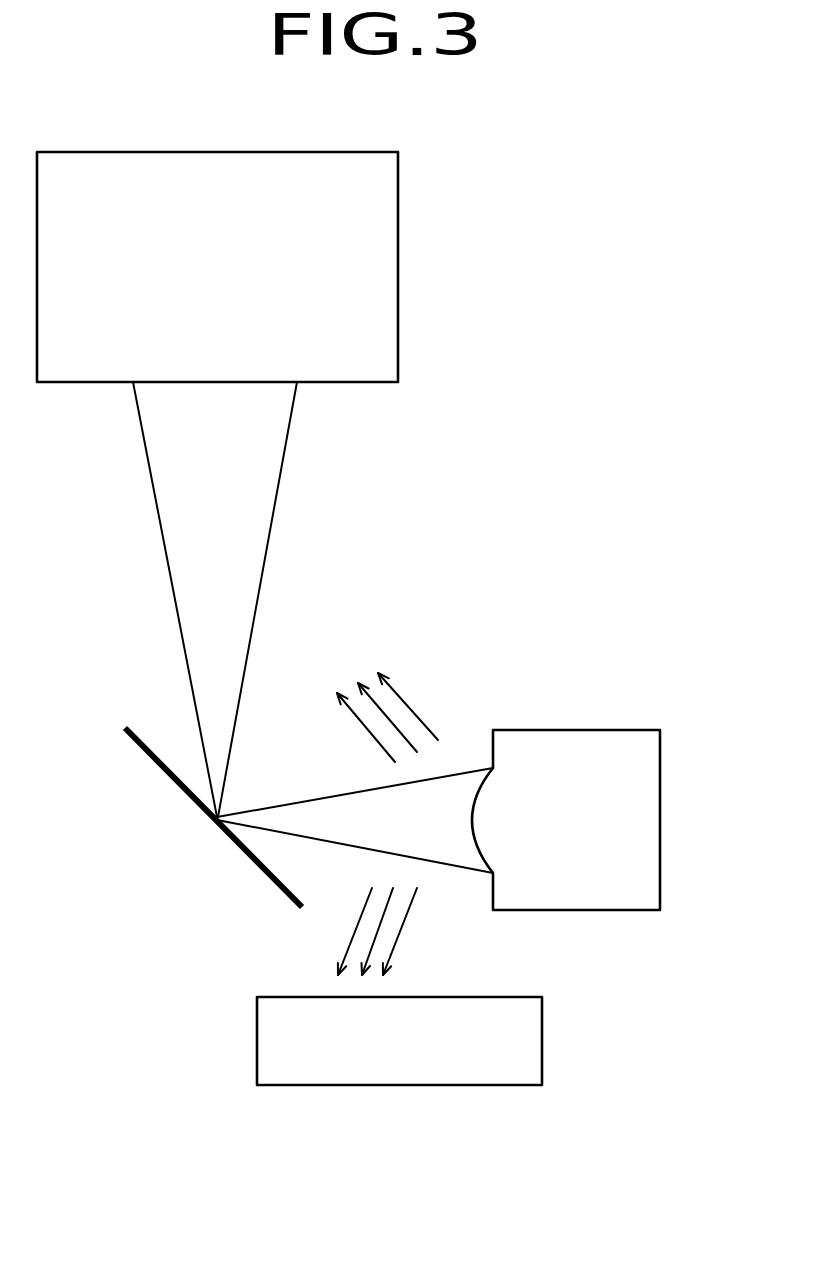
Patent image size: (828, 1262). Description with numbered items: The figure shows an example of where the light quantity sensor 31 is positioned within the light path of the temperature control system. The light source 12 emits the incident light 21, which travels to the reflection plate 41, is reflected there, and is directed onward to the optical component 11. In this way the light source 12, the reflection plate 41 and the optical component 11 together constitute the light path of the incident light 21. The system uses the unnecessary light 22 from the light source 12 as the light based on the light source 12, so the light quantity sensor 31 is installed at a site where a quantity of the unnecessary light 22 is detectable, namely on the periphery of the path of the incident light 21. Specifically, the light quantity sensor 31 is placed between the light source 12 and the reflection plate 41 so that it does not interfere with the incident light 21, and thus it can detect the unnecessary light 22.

The optical component 11 is at (398, 265).
The light source 12 is at (660, 825).
The incident light 21 is at (342, 863).
The unnecessary light 22 is at (420, 933).
The light quantity sensor 31 is at (380, 1085).
The reflection plate 41 is at (162, 772).